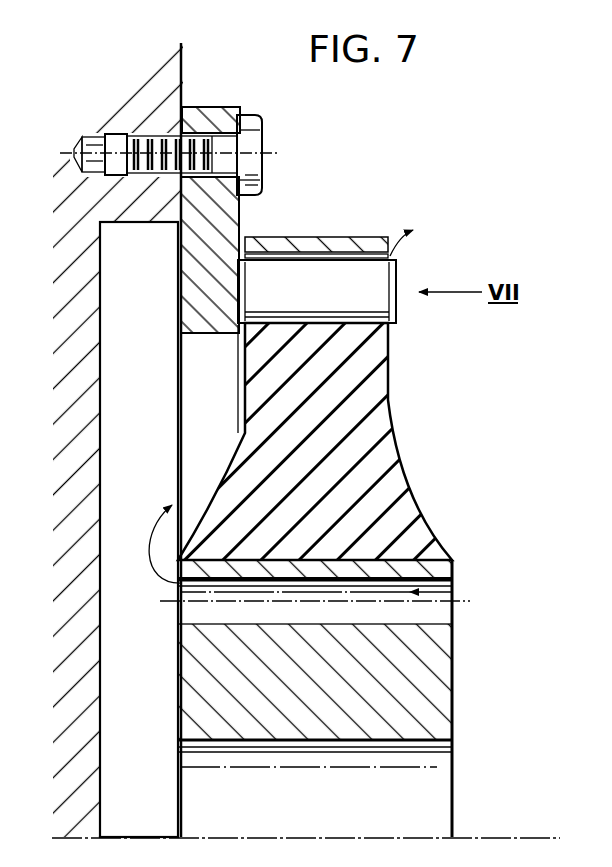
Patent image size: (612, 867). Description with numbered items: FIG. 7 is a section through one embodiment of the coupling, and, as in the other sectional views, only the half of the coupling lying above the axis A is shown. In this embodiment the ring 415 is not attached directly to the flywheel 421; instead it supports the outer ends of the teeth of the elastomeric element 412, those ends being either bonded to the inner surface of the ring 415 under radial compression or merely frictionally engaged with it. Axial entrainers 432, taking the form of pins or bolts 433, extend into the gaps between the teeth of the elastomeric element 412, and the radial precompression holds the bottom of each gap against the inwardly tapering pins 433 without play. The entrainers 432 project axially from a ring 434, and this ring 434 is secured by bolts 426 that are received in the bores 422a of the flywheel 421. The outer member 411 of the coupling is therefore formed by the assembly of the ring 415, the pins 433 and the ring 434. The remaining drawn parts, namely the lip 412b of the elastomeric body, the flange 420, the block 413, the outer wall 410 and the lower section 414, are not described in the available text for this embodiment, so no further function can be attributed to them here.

The outer member 411 is at (230, 88).
The bores of the flywheel 422a is at (118, 143).
The bolts 426 is at (253, 140).
The ring 434 is at (179, 272).
The flywheel 421 is at (88, 368).
The ring 415 is at (370, 245).
The axial entrainers 432 is at (398, 276).
The pins 433 is at (347, 303).
The elastomeric element 412 is at (380, 467).
The lip of body 412b is at (238, 418).
The flange plate 420 is at (452, 580).
The ring block 413 is at (422, 670).
The outer wall 410 is at (456, 731).
The lower section 414 is at (180, 785).
The axis A is at (504, 836).